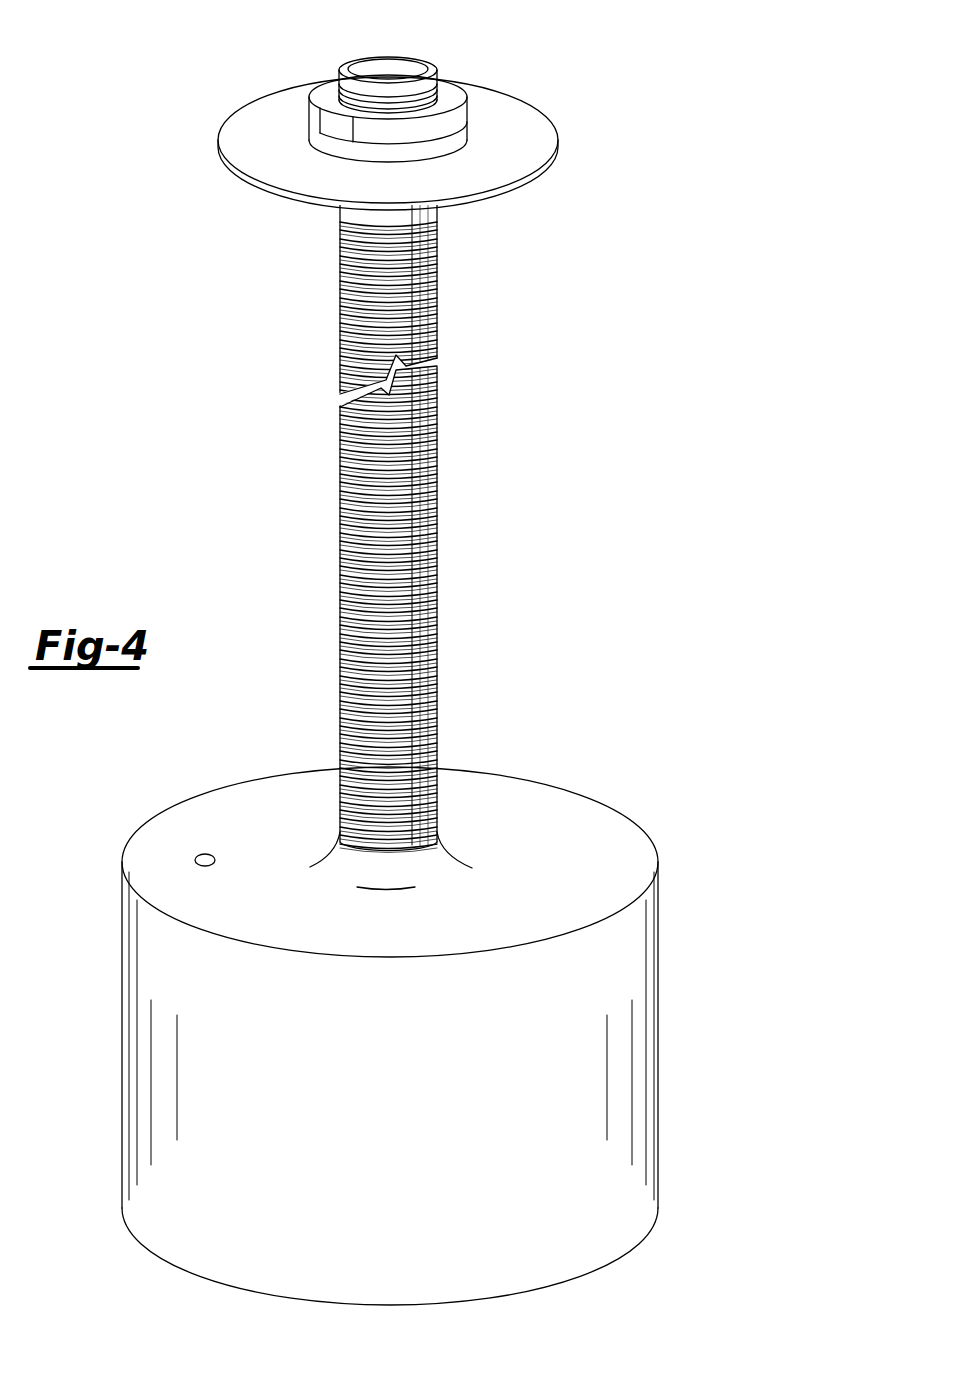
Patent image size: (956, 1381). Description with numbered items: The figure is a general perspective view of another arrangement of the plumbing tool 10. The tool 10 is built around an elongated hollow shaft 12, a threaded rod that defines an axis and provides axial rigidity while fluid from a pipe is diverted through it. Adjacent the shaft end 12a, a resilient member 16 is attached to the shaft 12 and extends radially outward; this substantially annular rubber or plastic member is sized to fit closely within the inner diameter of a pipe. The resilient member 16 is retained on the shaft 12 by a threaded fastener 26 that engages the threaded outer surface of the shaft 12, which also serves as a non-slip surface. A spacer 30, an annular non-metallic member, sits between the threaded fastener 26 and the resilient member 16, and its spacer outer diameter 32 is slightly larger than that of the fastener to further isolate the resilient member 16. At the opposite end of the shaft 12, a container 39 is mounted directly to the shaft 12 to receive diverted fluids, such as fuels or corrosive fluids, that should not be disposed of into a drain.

The plumbing tool 10 is at (467, 453).
The elongated hollow shaft 12 is at (437, 307).
The shaft end 12a is at (407, 62).
The resilient member 16 is at (493, 174).
The threaded fastener 26 is at (452, 90).
The spacer 30 is at (464, 138).
The spacer outer diameter 32 is at (310, 132).
The container 39 is at (591, 1196).